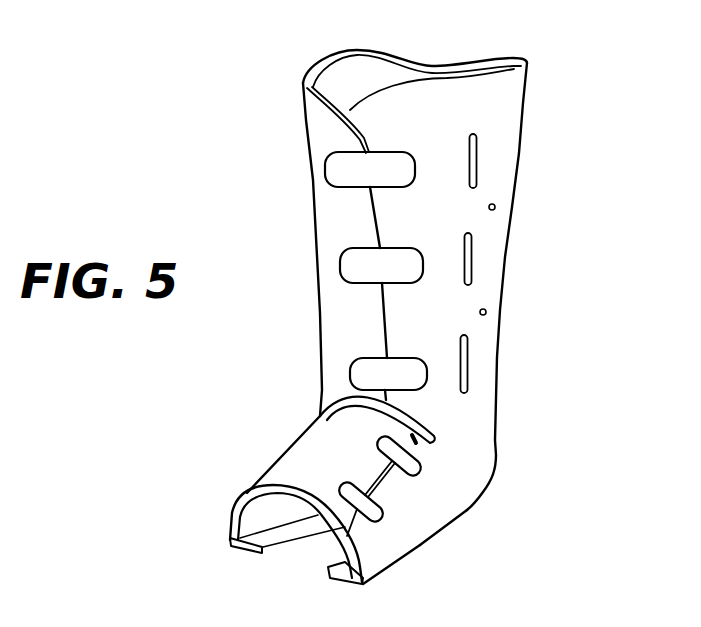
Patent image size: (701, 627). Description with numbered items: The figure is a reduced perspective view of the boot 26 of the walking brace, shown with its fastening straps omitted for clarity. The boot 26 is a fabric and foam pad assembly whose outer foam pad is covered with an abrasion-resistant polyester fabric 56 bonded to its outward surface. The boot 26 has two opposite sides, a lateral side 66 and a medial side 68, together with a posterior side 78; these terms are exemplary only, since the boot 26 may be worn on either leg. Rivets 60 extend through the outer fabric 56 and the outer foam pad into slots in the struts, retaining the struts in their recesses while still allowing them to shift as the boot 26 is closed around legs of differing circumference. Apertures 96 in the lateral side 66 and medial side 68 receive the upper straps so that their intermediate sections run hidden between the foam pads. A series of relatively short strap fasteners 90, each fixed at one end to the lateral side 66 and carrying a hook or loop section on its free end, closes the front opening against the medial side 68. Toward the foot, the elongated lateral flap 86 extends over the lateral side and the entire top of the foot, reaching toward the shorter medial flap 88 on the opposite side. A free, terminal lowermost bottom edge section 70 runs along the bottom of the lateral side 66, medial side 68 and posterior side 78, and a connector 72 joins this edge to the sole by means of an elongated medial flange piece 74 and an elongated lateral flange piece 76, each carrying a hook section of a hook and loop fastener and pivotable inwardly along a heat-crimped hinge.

The boot 26 is at (359, 317).
The abrasion-resistant polyester fabric 56 is at (513, 102).
The lateral side 66 is at (317, 128).
The posterior side 78 is at (443, 60).
The apertures 96 is at (478, 155).
The medial side 68 is at (453, 222).
The rivets 60 is at (495, 206).
The strap fasteners 90 is at (403, 180).
The lateral flap 86 is at (317, 453).
The medial flap 88 is at (403, 495).
The lowermost bottom edge section 70 is at (413, 545).
The connector 72 is at (218, 520).
The medial flange piece 74 is at (338, 578).
The lateral flange piece 76 is at (258, 552).